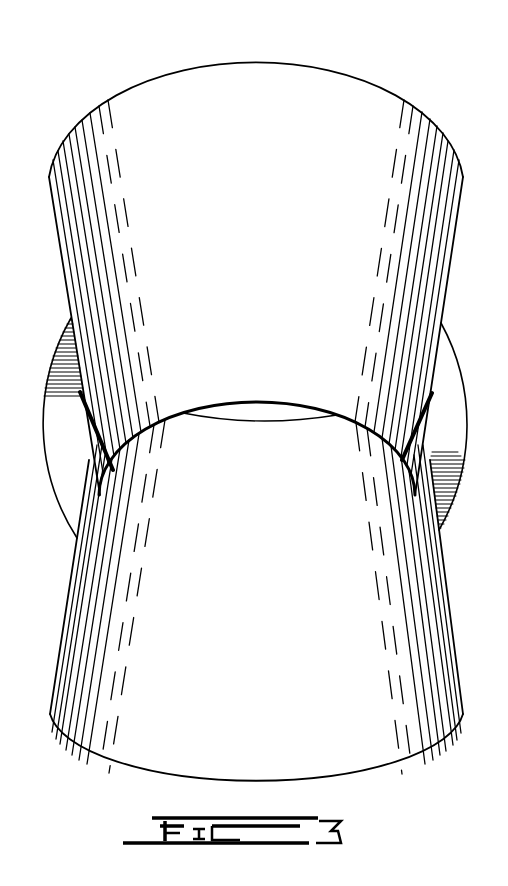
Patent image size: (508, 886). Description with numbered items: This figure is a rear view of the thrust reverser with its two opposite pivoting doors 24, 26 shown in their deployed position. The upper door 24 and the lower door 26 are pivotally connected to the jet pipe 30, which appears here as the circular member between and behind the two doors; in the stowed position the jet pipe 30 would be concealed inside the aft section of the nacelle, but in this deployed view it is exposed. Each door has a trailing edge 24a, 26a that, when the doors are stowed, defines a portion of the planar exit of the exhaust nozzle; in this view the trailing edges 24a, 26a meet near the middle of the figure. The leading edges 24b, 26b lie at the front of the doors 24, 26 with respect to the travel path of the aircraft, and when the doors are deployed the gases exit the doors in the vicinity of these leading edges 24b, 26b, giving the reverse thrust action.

The pivoting door 24 is at (256, 256).
The trailing edge 24a is at (263, 400).
The leading edge 24b is at (361, 78).
The pivoting door 26 is at (246, 609).
The trailing edge 26a is at (257, 424).
The leading edge 26b is at (404, 768).
The jet pipe 30 is at (62, 428).